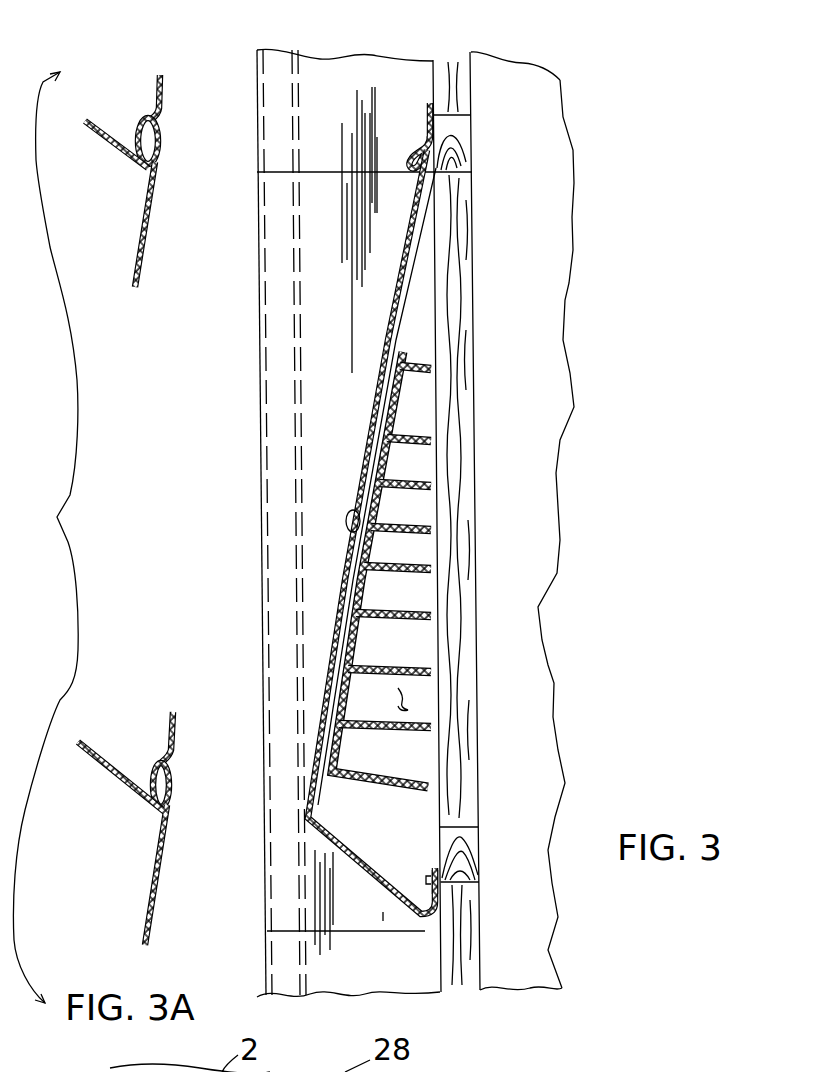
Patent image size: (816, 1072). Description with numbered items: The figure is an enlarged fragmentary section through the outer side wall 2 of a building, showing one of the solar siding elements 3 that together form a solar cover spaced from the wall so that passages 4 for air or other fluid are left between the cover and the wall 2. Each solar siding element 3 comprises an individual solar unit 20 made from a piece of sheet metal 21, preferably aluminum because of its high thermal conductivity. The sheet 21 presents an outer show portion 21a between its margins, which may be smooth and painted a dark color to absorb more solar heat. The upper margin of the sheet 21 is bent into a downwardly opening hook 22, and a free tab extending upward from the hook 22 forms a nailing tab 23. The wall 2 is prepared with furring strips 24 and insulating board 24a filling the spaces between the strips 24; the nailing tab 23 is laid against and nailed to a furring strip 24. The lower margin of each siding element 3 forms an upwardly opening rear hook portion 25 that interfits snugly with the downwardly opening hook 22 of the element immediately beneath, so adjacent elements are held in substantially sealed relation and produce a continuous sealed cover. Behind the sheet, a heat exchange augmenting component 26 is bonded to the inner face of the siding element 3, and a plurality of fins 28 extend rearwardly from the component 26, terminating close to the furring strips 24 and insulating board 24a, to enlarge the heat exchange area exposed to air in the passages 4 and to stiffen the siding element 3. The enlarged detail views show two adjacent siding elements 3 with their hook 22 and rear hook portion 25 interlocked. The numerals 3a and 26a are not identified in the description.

In FIG. 3, the outer side wall 2 is at (418, 457).
In FIG. 3, the solar siding element 3 is at (347, 527).
In FIG. 3A, the solar siding element 3 is at (113, 141).
In FIG. 3, the wall 3a is at (476, 768).
In FIG. 3, the passage 4 is at (429, 698).
In FIG. 3, the solar unit 20 is at (400, 342).
In FIG. 3, the sheet metal 21 is at (410, 262).
In FIG. 3, the show portion 21a is at (396, 332).
In FIG. 3, the downwardly opening hook 22 is at (406, 158).
In FIG. 3A, the downwardly opening hook 22 is at (138, 130).
In FIG. 3, the nailing tab 23 is at (425, 106).
In FIG. 3, the furring strip 24 is at (467, 150).
In FIG. 3, the insulating board 24a is at (428, 392).
In FIG. 3, the upwardly opening rear hook portion 25 is at (440, 885).
In FIG. 3A, the upwardly opening rear hook portion 25 is at (158, 815).
In FIG. 3, the heat exchange augmenting component 26 is at (362, 642).
In FIG. 3, the upper fin 26a is at (360, 528).
In FIG. 3, the fin 28 is at (434, 668).